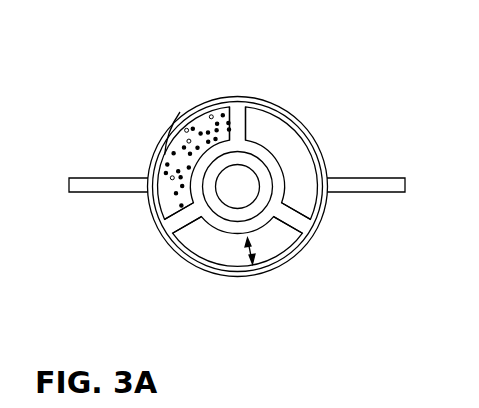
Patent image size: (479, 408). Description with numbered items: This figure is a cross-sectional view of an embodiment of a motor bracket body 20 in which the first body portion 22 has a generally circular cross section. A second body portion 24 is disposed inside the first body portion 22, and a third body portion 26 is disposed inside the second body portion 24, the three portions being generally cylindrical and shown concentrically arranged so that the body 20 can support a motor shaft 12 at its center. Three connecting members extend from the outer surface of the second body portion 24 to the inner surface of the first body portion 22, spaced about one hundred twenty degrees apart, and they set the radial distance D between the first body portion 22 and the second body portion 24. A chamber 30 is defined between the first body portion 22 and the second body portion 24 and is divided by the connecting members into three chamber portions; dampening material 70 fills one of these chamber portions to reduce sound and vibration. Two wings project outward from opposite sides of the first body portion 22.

The motor shaft 12 is at (243, 175).
The body 20 is at (302, 78).
The first body portion 22 is at (322, 158).
The second body portion 24 is at (282, 163).
The third body portion 26 is at (258, 167).
The chamber 30 is at (158, 159).
The dampening material 70 is at (182, 150).
The distance D is at (255, 250).